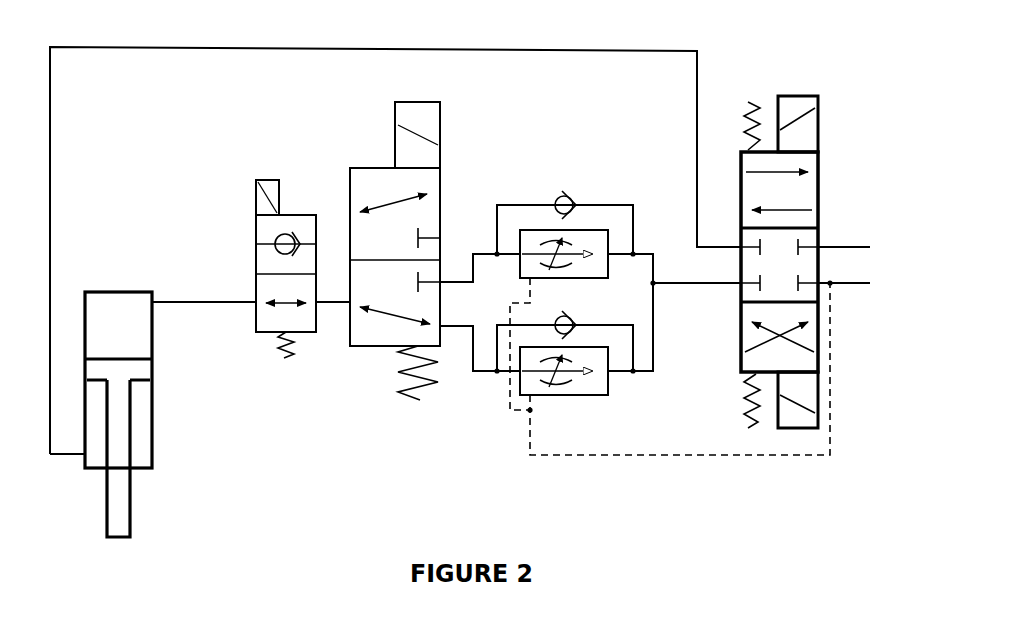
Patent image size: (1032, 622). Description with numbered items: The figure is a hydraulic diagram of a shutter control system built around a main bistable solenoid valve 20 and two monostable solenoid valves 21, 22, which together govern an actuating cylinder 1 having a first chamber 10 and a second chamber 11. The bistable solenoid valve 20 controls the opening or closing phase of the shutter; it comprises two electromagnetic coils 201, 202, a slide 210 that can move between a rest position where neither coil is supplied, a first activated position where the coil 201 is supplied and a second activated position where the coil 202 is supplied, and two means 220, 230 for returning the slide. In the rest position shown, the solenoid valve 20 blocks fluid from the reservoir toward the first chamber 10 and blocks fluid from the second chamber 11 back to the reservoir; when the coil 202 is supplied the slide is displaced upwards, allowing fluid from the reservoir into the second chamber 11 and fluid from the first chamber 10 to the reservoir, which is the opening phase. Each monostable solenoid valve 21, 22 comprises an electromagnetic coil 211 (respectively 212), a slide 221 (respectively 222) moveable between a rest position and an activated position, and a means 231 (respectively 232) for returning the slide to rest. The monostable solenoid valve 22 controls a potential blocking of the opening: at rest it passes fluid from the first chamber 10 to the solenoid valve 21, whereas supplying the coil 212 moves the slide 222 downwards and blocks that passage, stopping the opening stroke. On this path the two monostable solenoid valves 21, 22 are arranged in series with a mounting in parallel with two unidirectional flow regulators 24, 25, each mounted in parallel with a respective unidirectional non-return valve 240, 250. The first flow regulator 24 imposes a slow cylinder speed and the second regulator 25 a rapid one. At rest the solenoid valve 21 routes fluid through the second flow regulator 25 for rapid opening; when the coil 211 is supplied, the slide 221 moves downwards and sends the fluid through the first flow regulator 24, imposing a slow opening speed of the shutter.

The actuating cylinder 1 is at (72, 507).
The first chamber 10 is at (141, 335).
The second chamber 11 is at (143, 422).
The bistable solenoid valve 20 is at (793, 267).
The electromagnetic coil 201 is at (818, 125).
The electromagnetic coil 202 is at (818, 400).
The slide 210 is at (820, 191).
The means for returning the slide 220 is at (748, 102).
The means for returning the slide 230 is at (748, 429).
The monostable solenoid valve 21 is at (425, 267).
The electromagnetic coil 211 is at (440, 137).
The slide 221 is at (441, 206).
The means for returning the slide 231 is at (420, 400).
The monostable solenoid valve 22 is at (246, 267).
The electromagnetic coil 212 is at (256, 201).
The slide 222 is at (256, 263).
The means for returning the slide 232 is at (284, 358).
The first unidirectional flow regulator 24 is at (590, 278).
The unidirectional non-return valve 240 is at (578, 195).
The second unidirectional flow regulator 25 is at (590, 395).
The unidirectional non-return valve 250 is at (580, 321).